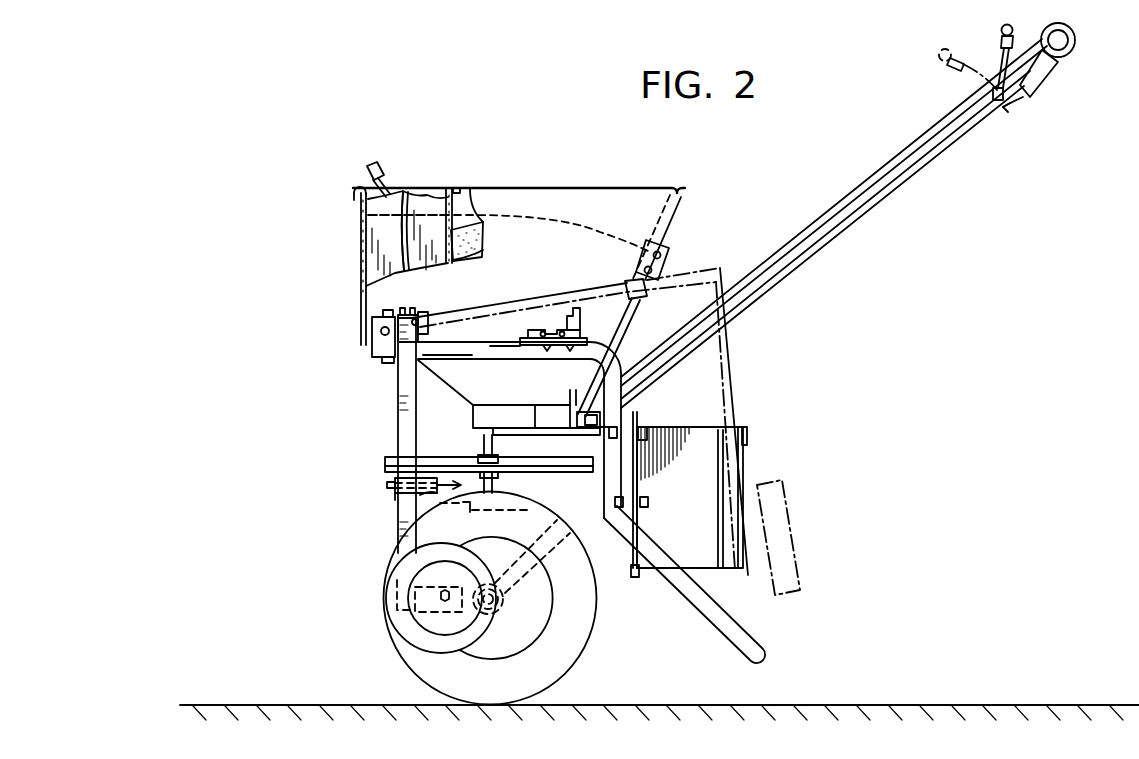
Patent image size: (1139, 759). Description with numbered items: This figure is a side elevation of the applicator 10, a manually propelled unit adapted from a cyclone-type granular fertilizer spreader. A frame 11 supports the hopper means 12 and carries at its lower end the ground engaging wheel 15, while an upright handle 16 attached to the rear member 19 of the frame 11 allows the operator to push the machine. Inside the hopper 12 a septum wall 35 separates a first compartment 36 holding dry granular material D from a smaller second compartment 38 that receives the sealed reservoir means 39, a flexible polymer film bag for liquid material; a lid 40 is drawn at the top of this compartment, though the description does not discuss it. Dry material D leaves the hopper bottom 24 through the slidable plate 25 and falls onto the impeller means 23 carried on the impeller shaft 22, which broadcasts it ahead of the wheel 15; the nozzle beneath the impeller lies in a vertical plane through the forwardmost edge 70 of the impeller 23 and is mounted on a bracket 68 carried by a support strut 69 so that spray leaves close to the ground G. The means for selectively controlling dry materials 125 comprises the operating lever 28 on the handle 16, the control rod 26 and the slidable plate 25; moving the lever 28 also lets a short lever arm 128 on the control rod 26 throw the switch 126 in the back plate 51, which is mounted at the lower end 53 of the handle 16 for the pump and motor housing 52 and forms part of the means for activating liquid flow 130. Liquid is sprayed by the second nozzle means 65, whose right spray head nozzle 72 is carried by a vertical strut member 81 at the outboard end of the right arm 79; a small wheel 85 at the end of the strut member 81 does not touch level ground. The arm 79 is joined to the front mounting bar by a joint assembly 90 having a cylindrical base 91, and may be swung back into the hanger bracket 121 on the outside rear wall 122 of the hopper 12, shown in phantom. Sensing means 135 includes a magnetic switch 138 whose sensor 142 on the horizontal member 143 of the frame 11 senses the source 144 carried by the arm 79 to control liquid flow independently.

The applicator 10 is at (287, 131).
The frame 11 is at (460, 352).
The hopper means 12 is at (553, 190).
The ground engaging wheel 15 is at (572, 657).
The upright handle 16 is at (870, 206).
The rear member 19 is at (615, 457).
The impeller shaft 22 is at (485, 445).
The impeller means 23 is at (537, 482).
The hopper bottom 24 is at (470, 417).
The slidable plate 25 is at (535, 430).
The control rod 26 is at (824, 213).
The operating lever 28 is at (1002, 27).
The septum wall 35 is at (447, 190).
The first compartment 36 is at (487, 197).
The second compartment 38 is at (423, 188).
The sealed reservoir means 39 is at (390, 238).
The lid 40 is at (368, 172).
The back plate 51 is at (632, 565).
The pump and motor housing 52 is at (703, 602).
The lower end of handle 53 is at (622, 512).
The nozzle means 65 is at (388, 500).
The bracket 68 is at (433, 500).
The support strut 69 is at (553, 505).
The forwardmost edge of impeller 70 is at (385, 460).
The right spray head nozzle 72 is at (390, 478).
The right arm 79 is at (522, 323).
The vertical strut member 81 is at (733, 393).
The wheel 85 is at (405, 627).
The joint assembly 90 is at (365, 330).
The cylindrical base 91 is at (382, 350).
The hanger bracket 121 is at (665, 259).
The outside rear wall 122 is at (677, 205).
The means for selectively controlling the application of dry materials 125 is at (548, 425).
The switch 126 is at (640, 408).
The short lever arm 128 is at (590, 430).
The means for selectively activating the flow of liquid materials 130 is at (1050, 85).
The sensing means 135 is at (580, 323).
The magnetic switch 138 is at (553, 330).
The sensor 142 is at (573, 325).
The horizontal member 143 is at (520, 350).
The source 144 is at (520, 321).
The dry granular material D is at (470, 228).
The ground G is at (875, 705).